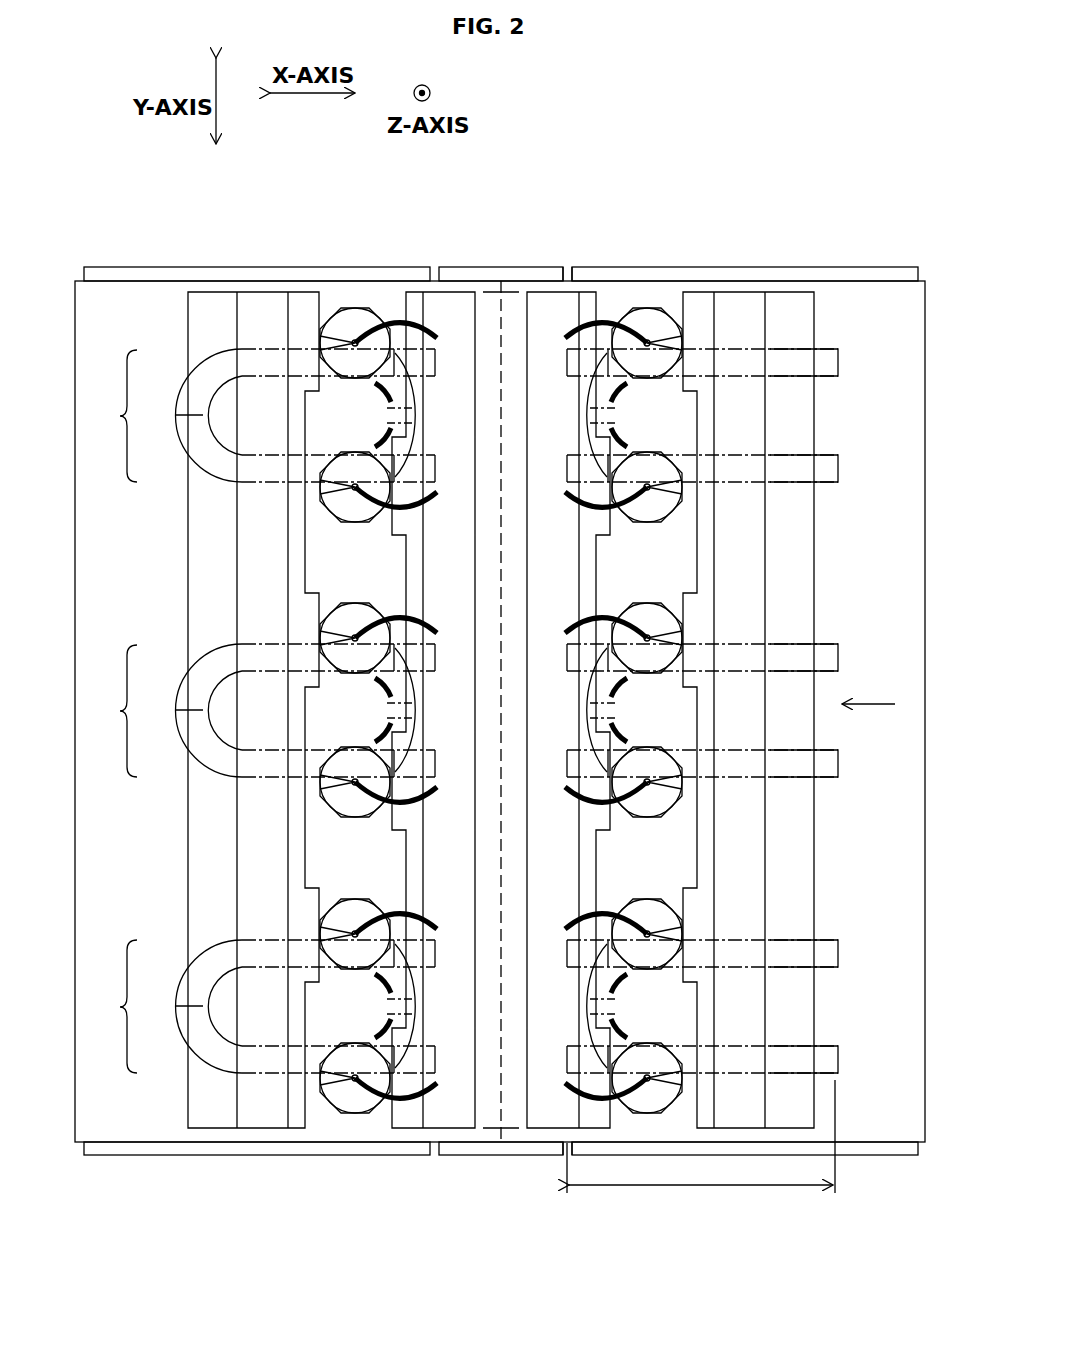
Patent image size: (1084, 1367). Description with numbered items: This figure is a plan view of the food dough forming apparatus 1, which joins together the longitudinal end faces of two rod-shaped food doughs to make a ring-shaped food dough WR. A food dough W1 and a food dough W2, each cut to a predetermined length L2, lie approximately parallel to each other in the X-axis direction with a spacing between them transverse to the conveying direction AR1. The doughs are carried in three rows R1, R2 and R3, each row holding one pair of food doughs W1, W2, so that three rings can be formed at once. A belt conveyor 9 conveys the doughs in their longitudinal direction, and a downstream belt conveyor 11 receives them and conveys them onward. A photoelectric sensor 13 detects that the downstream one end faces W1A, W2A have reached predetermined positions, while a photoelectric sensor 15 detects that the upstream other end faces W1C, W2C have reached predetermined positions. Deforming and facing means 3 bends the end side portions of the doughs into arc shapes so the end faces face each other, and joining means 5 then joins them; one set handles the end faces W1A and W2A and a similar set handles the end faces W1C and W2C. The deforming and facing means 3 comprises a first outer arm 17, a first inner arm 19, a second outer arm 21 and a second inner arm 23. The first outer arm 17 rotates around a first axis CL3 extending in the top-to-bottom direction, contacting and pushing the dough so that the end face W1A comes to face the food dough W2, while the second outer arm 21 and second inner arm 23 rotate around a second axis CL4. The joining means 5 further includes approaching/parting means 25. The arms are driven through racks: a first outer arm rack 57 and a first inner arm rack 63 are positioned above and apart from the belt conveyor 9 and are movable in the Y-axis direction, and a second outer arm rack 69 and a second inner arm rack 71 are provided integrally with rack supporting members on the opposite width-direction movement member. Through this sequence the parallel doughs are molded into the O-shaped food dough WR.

The food dough forming apparatus 1 is at (778, 207).
The deforming and facing means 3 is at (360, 257).
The joining means 5 is at (393, 257).
The belt conveyor 9 is at (867, 279).
The belt conveyor 11 is at (150, 279).
The photoelectric sensor 13 is at (560, 269).
The photoelectric sensor 15 is at (443, 269).
The first outer arm 17 is at (597, 1103).
The first inner arm 19 is at (617, 1027).
The second outer arm 21 is at (588, 913).
The second inner arm 23 is at (617, 983).
The approaching/parting means 25 is at (617, 152).
The first outer arm rack 57 is at (587, 783).
The first inner arm rack 63 is at (585, 1132).
The second outer arm rack 69 is at (748, 767).
The second inner arm rack 71 is at (702, 1130).
The food dough W1 is at (262, 1075).
The food dough W2 is at (283, 940).
The end face W1A is at (567, 1048).
The end face W2A is at (567, 942).
The end face W1C is at (835, 1058).
The end face W2C is at (835, 947).
The ring-shaped food dough WR is at (217, 477).
The row R1 is at (111, 1006).
The row R2 is at (111, 711).
The row R3 is at (111, 416).
The first axis CL3 is at (647, 1078).
The second axis CL4 is at (647, 934).
The conveying direction arrow AR1 is at (880, 705).
The length L2 is at (701, 1136).